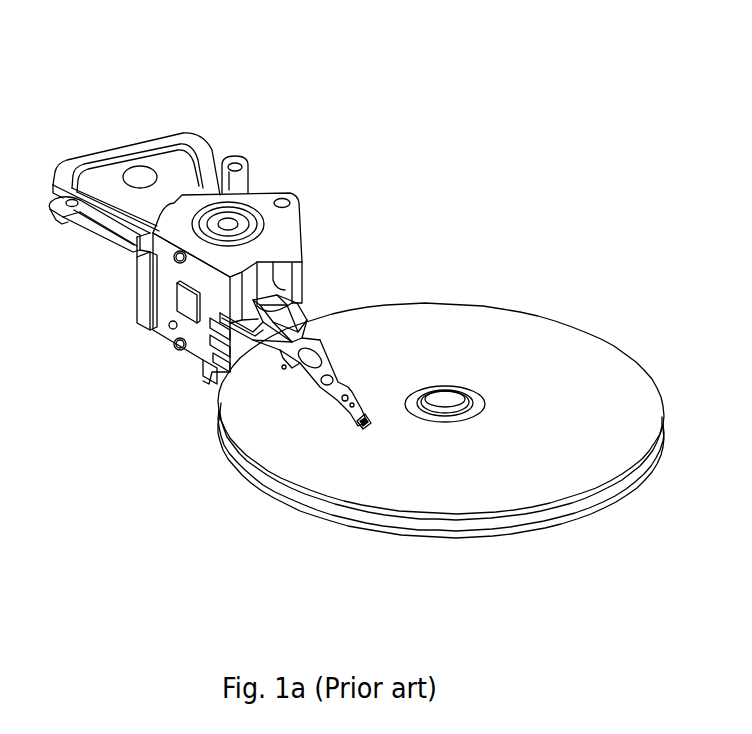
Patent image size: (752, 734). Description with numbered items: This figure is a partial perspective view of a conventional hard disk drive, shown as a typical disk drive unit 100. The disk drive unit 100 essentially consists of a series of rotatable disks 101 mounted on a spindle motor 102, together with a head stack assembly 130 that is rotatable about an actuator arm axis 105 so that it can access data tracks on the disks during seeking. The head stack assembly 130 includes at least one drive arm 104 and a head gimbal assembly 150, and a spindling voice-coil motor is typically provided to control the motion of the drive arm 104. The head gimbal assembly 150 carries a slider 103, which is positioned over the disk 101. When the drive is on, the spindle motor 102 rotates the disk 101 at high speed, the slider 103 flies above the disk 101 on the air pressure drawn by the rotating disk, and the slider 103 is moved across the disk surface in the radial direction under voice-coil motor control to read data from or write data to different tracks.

The disk drive unit 100 is at (72, 46).
The rotatable disk 101 is at (555, 387).
The spindle motor 102 is at (450, 397).
The slider 103 is at (366, 411).
The drive arm 104 is at (310, 340).
The actuator arm axis 105 is at (230, 224).
The head stack assembly 130 is at (295, 250).
The head gimbal assembly 150 is at (340, 382).